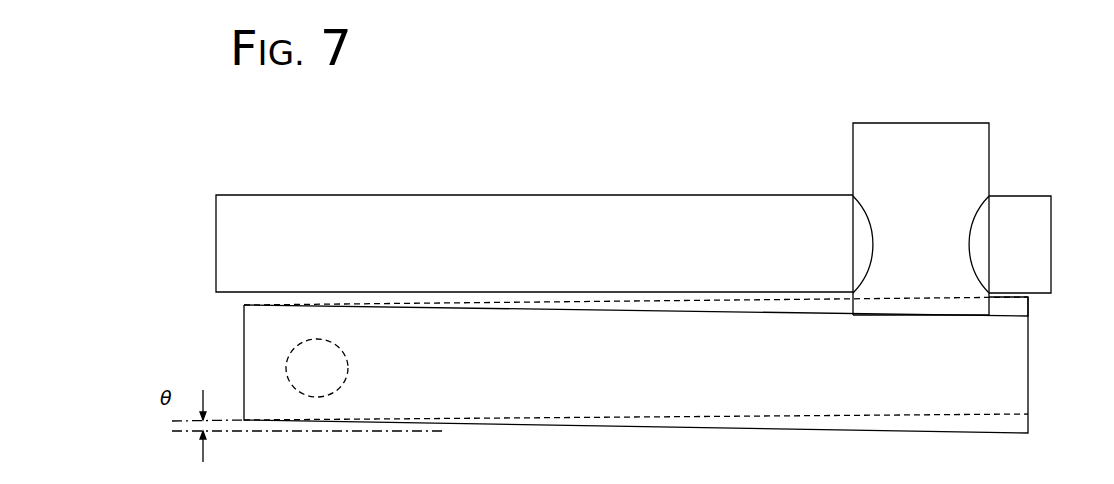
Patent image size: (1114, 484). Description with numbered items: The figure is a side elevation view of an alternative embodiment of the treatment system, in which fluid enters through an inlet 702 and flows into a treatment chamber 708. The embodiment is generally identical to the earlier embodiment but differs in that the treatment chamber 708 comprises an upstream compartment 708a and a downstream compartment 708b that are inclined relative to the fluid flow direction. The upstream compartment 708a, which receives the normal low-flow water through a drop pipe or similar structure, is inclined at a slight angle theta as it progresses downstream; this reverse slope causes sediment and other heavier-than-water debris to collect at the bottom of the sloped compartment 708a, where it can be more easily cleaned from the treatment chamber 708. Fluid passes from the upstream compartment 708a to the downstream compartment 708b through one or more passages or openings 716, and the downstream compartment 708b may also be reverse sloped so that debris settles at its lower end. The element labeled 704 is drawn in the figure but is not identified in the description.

The inlet 702 is at (222, 242).
The head block 704 is at (1038, 217).
The treatment chamber 708 is at (250, 360).
The upstream compartment 708a is at (1020, 425).
The downstream compartment 708b is at (1020, 302).
The passages or openings 716 is at (325, 395).